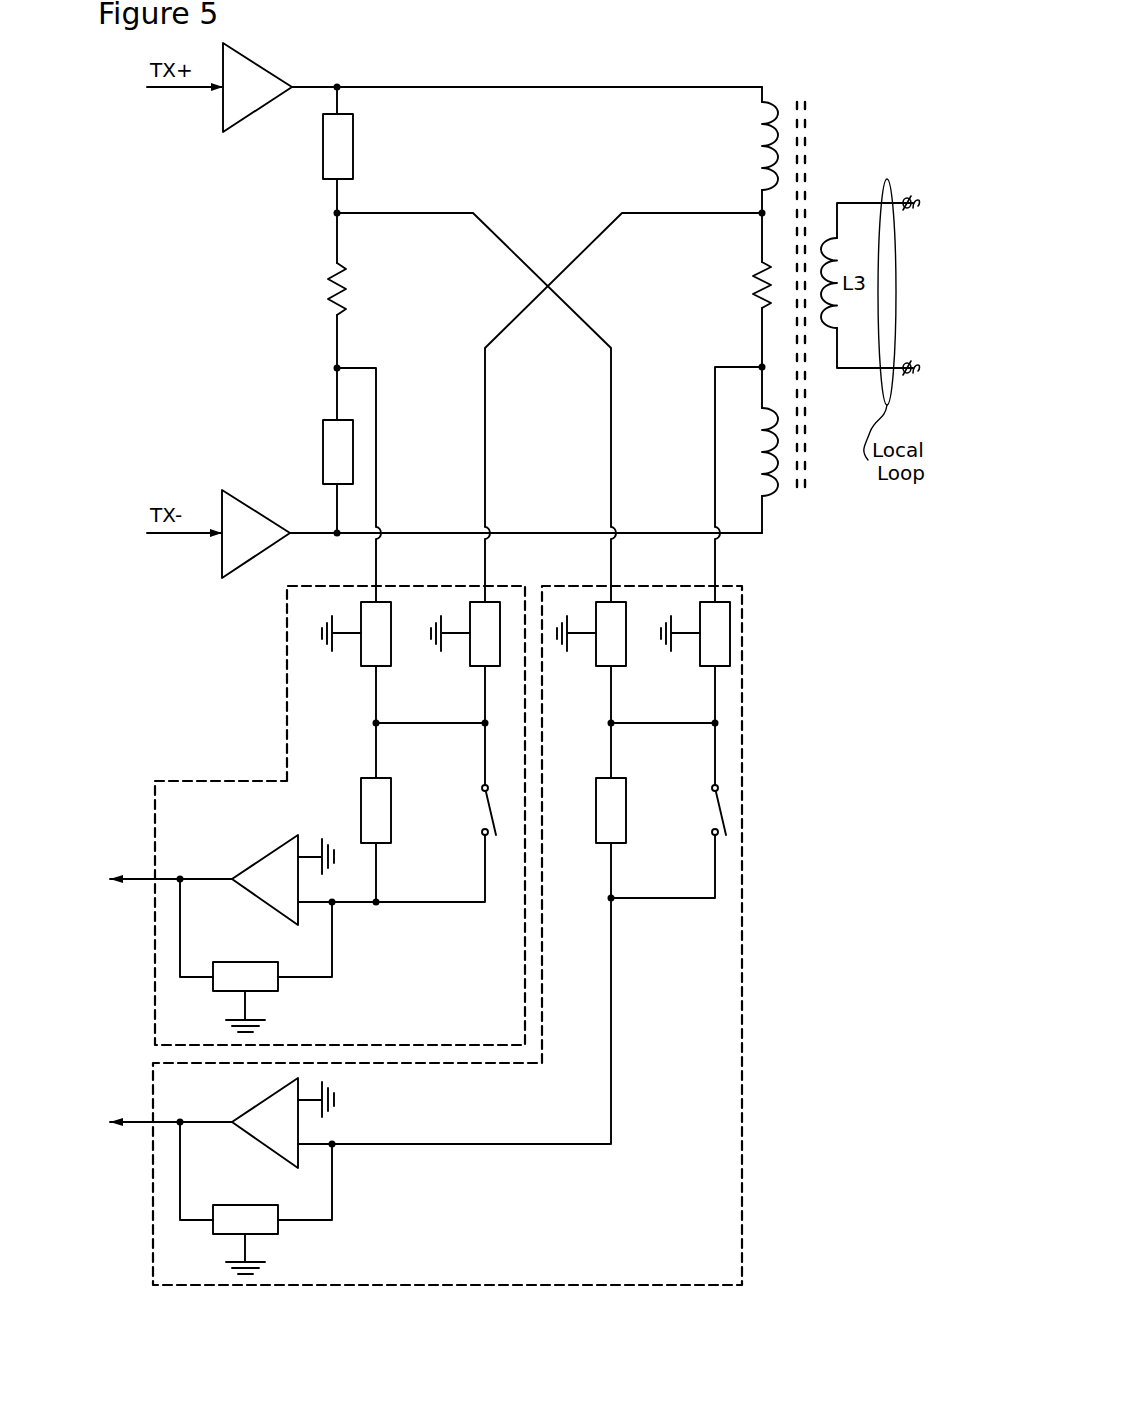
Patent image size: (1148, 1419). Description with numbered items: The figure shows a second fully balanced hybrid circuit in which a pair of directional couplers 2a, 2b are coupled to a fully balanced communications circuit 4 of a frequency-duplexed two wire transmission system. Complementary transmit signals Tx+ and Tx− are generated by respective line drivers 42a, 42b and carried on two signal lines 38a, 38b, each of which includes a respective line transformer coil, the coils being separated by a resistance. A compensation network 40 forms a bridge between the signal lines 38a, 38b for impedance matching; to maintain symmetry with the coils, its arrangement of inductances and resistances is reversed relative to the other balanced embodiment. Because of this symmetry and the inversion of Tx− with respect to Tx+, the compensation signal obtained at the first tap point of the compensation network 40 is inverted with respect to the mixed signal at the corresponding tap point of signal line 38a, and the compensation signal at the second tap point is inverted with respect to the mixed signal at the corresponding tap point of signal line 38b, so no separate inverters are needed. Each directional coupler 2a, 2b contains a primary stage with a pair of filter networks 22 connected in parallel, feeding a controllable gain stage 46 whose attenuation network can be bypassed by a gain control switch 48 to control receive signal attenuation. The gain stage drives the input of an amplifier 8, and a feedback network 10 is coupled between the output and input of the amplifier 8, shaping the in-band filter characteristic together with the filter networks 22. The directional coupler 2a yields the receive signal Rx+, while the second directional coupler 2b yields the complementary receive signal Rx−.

The directional coupler 2a is at (218, 781).
The second directional coupler 2b is at (742, 1080).
The communications circuit 4 is at (755, 54).
The amplifier 8 is at (277, 843).
The feedback network 10 is at (240, 960).
The filter network 22 is at (361, 667).
The signal line 38a is at (535, 87).
The signal line 38b is at (542, 533).
The compensation network 40 is at (254, 224).
The line driver 42a is at (270, 72).
The line driver 42b is at (238, 497).
The controllable gain stage 46 is at (391, 793).
The gain control switch 48 is at (470, 819).